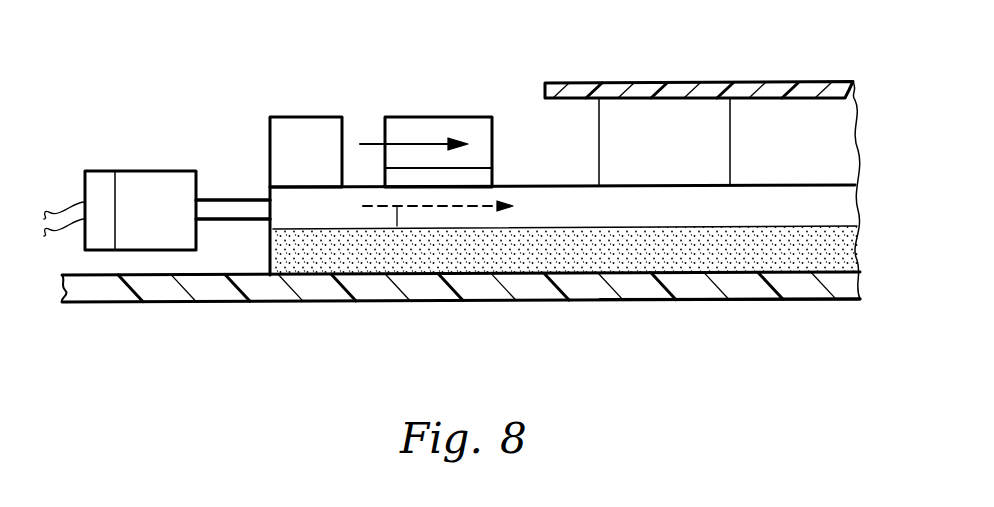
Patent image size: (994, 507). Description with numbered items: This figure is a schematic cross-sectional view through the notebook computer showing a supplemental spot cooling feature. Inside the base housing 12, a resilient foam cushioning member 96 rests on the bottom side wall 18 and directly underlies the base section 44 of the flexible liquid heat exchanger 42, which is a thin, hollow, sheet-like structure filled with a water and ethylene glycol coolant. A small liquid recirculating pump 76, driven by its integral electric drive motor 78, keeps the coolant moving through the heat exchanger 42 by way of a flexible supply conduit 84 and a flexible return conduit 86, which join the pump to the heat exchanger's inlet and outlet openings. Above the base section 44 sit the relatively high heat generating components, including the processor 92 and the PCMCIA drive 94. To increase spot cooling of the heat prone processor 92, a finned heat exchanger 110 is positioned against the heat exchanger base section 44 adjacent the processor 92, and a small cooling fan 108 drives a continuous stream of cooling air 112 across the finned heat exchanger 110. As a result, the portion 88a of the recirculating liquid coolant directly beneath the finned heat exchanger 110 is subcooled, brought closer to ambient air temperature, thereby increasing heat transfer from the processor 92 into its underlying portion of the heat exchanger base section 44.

The base housing 12 is at (172, 302).
The bottom side wall 18 is at (705, 300).
The heat exchanger structure 42 is at (556, 182).
The base section 44 is at (476, 228).
The liquid recirculating pump 76 is at (160, 178).
The electric drive motor 78 is at (100, 180).
The supply conduit 84 is at (238, 198).
The return conduit 86 is at (238, 198).
The portion of the recirculating liquid coolant 88a is at (396, 230).
The processor 92 is at (730, 147).
The PCMCIA drive 94 is at (780, 82).
The foam cushioning member 96 is at (598, 253).
The cooling fan 108 is at (305, 117).
The finned heat exchanger 110 is at (392, 117).
The cooling air 112 is at (437, 140).